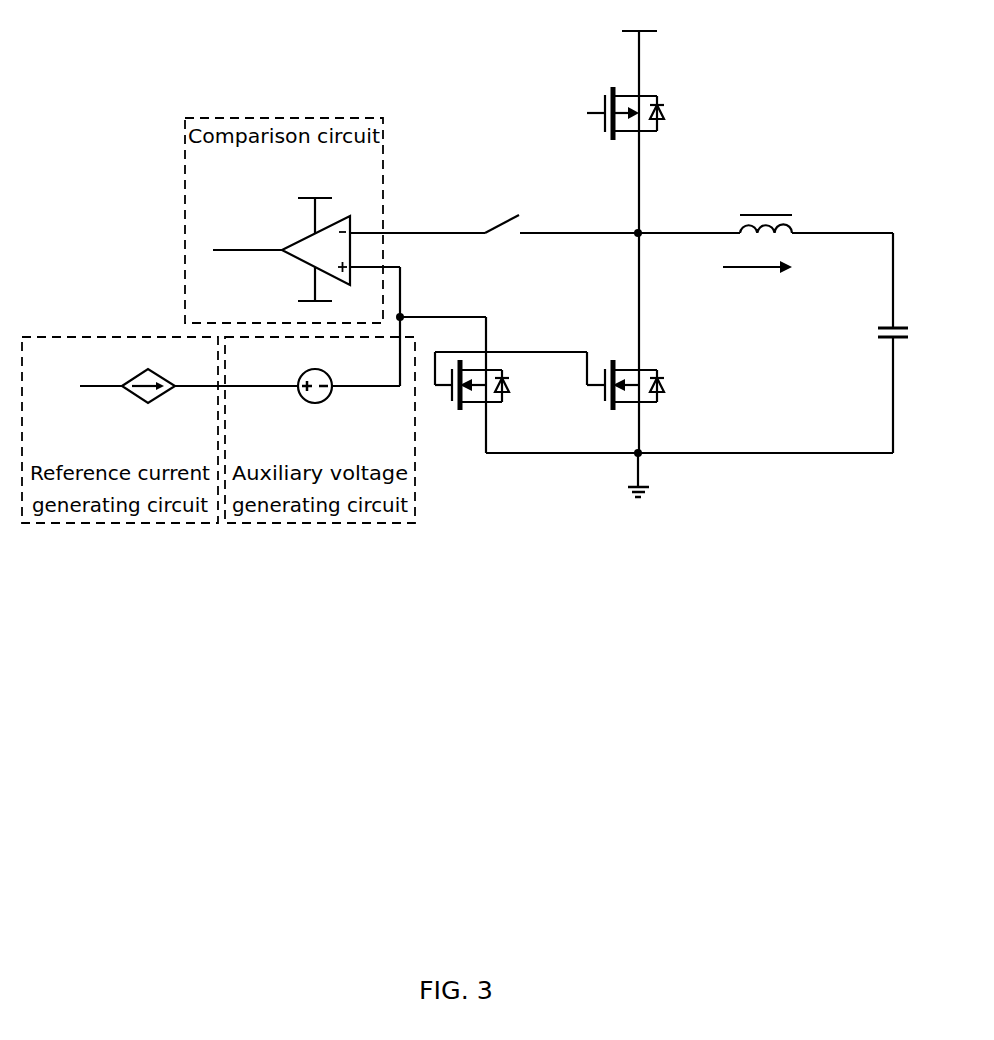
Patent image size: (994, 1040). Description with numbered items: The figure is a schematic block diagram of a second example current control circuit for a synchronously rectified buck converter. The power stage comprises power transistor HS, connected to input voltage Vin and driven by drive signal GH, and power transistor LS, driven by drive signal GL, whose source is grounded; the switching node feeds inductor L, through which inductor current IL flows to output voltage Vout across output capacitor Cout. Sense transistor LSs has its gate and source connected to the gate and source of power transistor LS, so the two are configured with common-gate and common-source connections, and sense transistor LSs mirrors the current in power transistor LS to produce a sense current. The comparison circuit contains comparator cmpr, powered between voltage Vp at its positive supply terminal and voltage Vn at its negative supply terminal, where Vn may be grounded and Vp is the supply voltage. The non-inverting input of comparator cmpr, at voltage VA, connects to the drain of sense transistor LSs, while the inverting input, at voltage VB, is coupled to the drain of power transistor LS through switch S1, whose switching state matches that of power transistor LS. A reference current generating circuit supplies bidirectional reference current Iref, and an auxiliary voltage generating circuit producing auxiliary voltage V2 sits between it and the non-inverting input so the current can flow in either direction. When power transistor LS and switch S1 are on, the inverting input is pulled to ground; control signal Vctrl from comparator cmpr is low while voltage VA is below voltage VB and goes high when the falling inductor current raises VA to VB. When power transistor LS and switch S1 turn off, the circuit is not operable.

The input voltage Vin is at (661, 58).
The power transistor HS is at (660, 113).
The drive signal GH is at (578, 111).
The comparator cmpr is at (300, 250).
The control signal Vctrl is at (247, 235).
The voltage Vp is at (319, 200).
The voltage Vn is at (302, 293).
The voltage VB is at (417, 219).
The switch S1 is at (559, 208).
The voltage VA is at (418, 326).
The inductor L is at (765, 209).
The inductor current IL is at (758, 285).
The output voltage Vout is at (900, 264).
The output capacitor Cout is at (870, 390).
The sense transistor LSs is at (486, 385).
The drive signal GL is at (520, 375).
The power transistor LS is at (644, 406).
The reference current Iref is at (188, 373).
The auxiliary voltage V2 is at (338, 400).